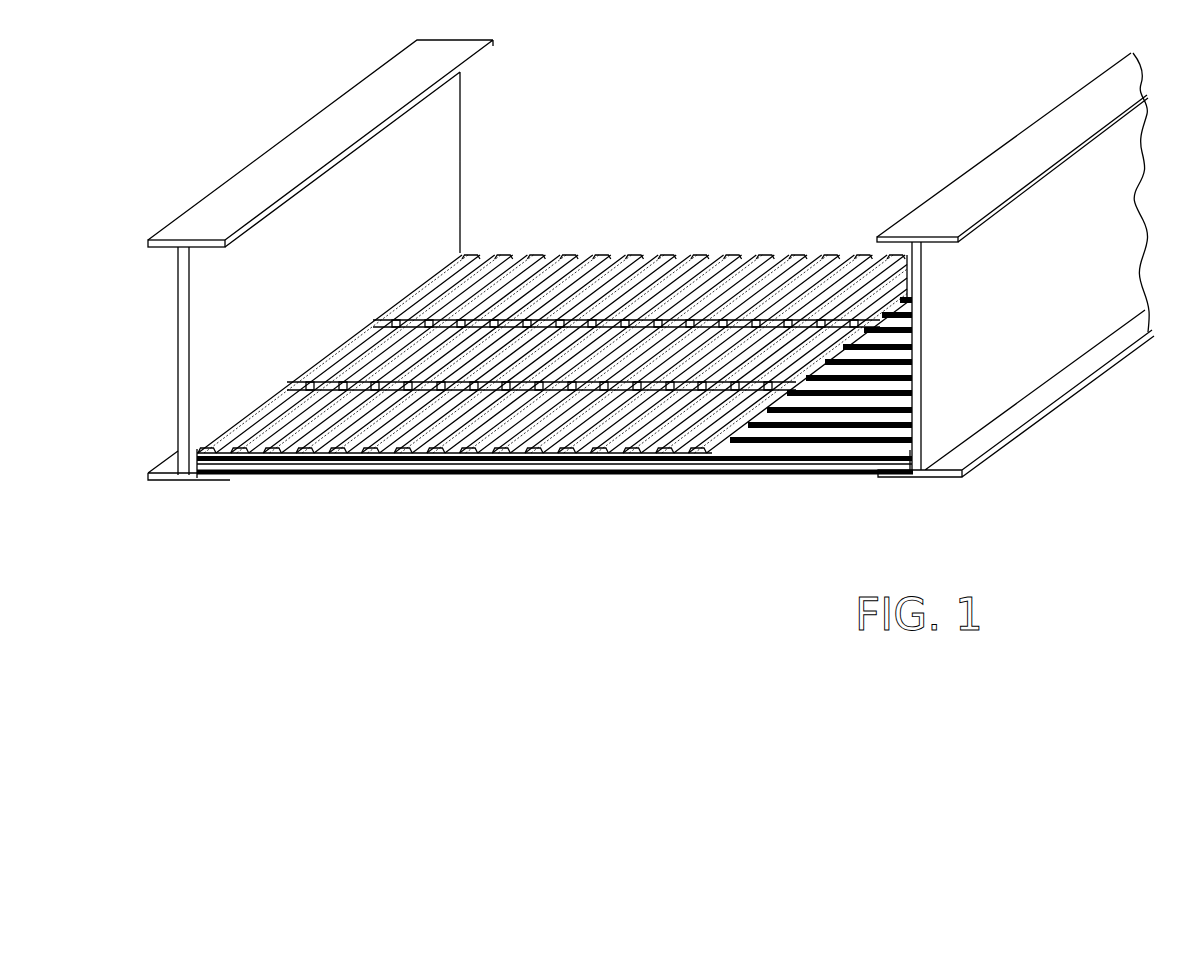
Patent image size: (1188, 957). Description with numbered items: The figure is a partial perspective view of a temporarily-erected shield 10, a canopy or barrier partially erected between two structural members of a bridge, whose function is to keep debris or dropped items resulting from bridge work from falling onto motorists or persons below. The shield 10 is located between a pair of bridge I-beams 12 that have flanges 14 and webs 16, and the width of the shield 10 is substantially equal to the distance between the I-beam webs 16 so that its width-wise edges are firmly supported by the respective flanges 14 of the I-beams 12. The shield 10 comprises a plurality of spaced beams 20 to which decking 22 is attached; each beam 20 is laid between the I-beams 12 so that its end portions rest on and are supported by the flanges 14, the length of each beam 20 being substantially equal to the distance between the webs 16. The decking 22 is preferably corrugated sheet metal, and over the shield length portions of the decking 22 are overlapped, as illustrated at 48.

The shield 10 is at (651, 297).
The I-beams 12 is at (651, 297).
The flanges 14 is at (215, 481).
The I-beam webs 16 is at (189, 338).
The beams 20 is at (720, 465).
The decking 22 is at (555, 363).
The overlapped portions of decking 48 is at (387, 318).